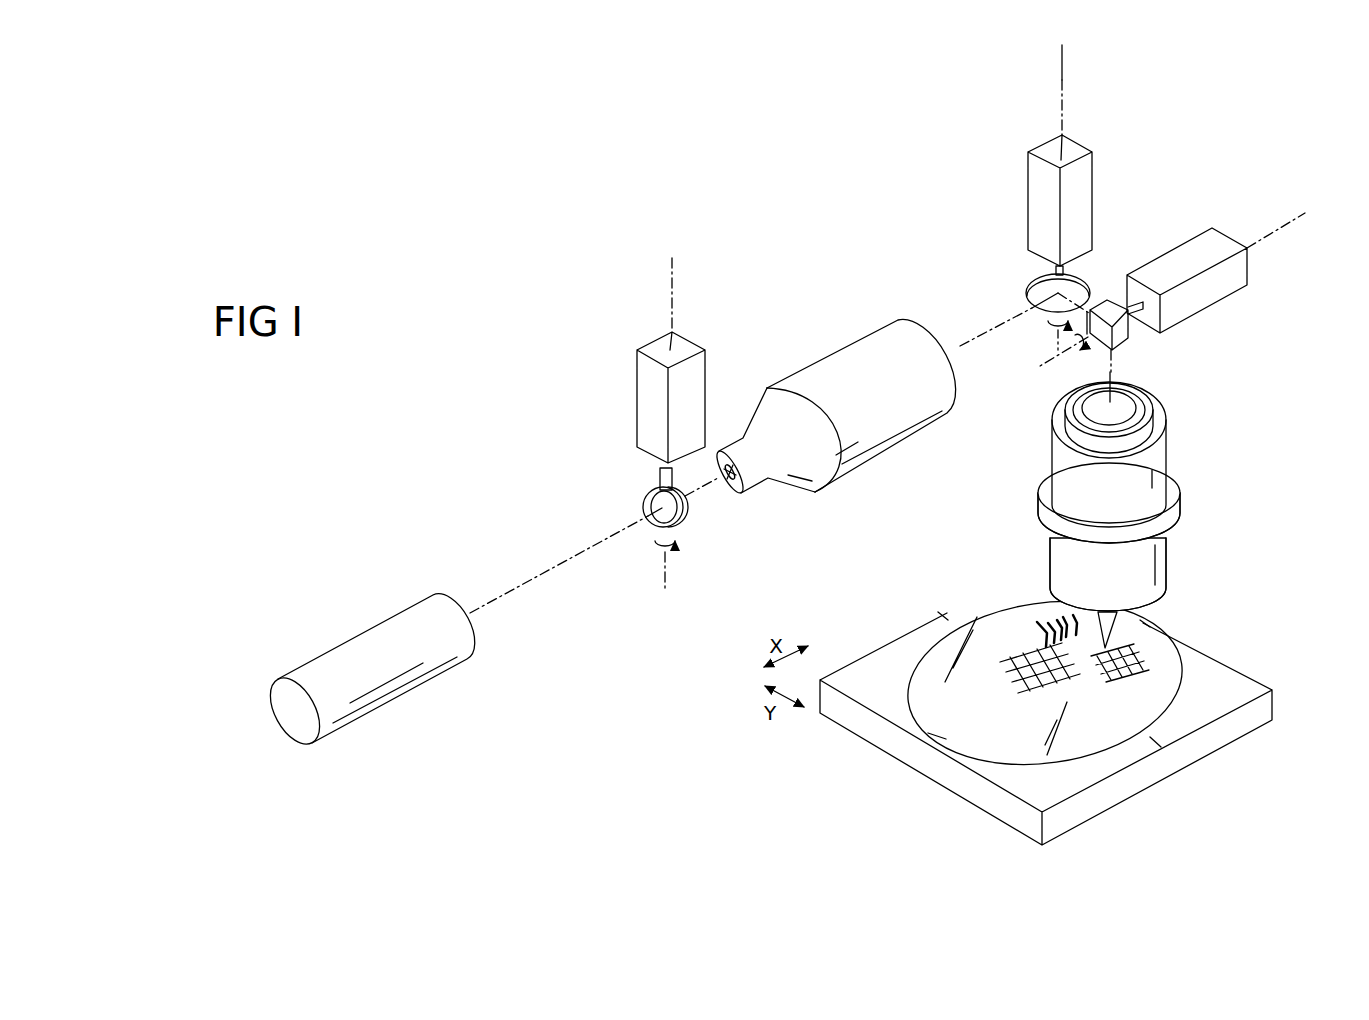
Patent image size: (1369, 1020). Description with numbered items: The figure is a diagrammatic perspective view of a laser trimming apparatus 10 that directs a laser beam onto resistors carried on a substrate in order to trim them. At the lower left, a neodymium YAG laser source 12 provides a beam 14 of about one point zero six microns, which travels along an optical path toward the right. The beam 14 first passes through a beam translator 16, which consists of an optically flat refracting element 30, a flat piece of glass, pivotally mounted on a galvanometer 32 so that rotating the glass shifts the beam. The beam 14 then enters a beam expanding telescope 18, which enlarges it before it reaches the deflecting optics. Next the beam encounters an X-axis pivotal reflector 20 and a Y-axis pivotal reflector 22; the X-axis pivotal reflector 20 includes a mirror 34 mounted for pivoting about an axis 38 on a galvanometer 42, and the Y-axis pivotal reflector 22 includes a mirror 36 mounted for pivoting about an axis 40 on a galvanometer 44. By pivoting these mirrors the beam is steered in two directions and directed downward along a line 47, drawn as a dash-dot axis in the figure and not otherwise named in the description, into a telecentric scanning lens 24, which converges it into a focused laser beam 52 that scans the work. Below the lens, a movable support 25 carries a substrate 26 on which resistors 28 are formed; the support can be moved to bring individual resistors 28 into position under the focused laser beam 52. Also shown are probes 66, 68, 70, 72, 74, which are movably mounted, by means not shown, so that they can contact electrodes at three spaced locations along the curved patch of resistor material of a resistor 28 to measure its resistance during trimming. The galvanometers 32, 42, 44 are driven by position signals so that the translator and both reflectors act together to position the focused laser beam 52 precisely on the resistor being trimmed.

The laser trimming apparatus 10 is at (598, 227).
The neodymium YAG laser source 12 is at (360, 635).
The beam 14 is at (558, 576).
The beam translator 16 is at (641, 487).
The beam expanding telescope 18 is at (838, 348).
The X-axis pivotal reflector 20 is at (1021, 207).
The Y-axis pivotal reflector 22 is at (1204, 279).
The telecentric scanning lens 24 is at (1180, 488).
The movable support 25 is at (1256, 680).
The substrate 26 is at (1170, 631).
The resistors 28 is at (1122, 658).
The optically flat refracting element 30 is at (690, 517).
The galvanometer 32 is at (636, 378).
The mirror 34 is at (1028, 290).
The mirror 36 is at (1104, 300).
The axis 38 is at (1063, 72).
The axis 40 is at (1300, 214).
The galvanometer 42 is at (1093, 152).
The galvanometer 44 is at (1172, 249).
The optical axis 47 is at (1112, 372).
The focused laser beam 52 is at (1140, 610).
The probe 66 is at (1038, 625).
The probe 68 is at (1048, 623).
The probe 70 is at (1057, 620).
The probe 72 is at (1063, 617).
The probe 74 is at (1073, 615).